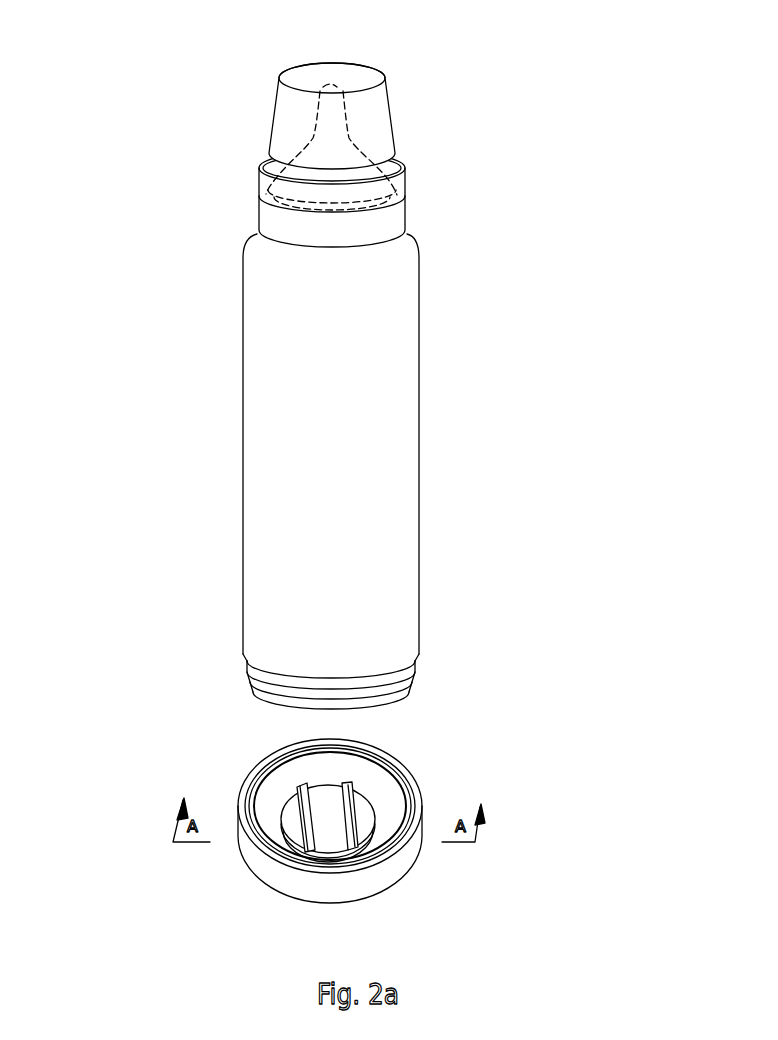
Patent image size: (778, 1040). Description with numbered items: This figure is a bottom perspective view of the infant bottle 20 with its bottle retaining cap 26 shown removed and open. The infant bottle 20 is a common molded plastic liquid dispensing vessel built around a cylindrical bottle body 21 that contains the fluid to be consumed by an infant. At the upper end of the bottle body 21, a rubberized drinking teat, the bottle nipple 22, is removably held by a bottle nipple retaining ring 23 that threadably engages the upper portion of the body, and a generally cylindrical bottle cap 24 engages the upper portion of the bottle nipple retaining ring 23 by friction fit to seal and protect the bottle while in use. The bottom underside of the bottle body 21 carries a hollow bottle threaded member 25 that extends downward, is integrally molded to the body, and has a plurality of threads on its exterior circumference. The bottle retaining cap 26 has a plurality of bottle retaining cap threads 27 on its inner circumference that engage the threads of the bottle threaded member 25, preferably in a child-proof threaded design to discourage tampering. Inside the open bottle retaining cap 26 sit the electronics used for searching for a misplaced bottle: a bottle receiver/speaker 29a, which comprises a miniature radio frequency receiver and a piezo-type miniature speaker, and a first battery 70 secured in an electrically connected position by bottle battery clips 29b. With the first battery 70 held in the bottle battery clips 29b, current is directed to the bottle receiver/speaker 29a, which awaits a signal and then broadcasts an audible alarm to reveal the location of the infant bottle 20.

The infant bottle 20 is at (86, 126).
The bottle body 21 is at (402, 517).
The bottle nipple 22 is at (348, 130).
The bottle nipple retaining ring 23 is at (390, 222).
The bottle cap 24 is at (365, 72).
The bottle threaded member 25 is at (405, 692).
The bottle retaining cap 26 is at (247, 841).
The bottle retaining cap threads 27 is at (407, 798).
The bottle receiver/speaker 29a is at (318, 862).
The bottle battery clips 29b is at (345, 789).
The first battery 70 is at (337, 851).